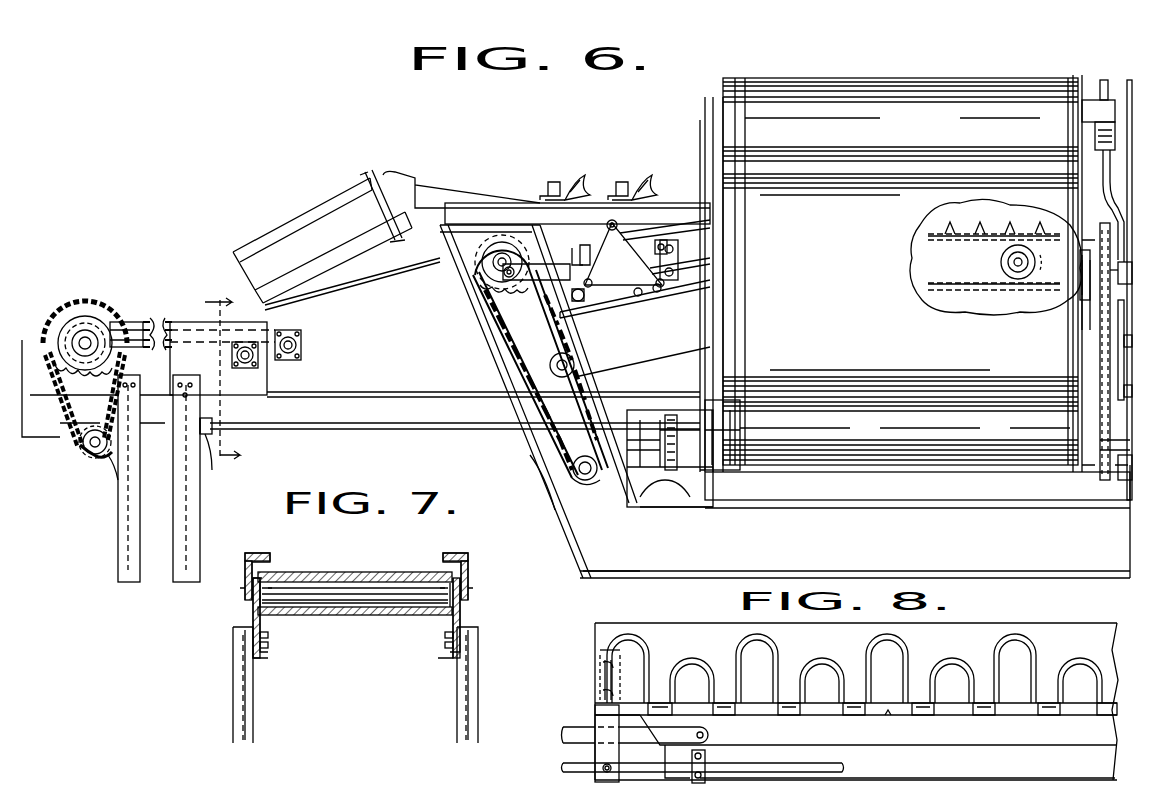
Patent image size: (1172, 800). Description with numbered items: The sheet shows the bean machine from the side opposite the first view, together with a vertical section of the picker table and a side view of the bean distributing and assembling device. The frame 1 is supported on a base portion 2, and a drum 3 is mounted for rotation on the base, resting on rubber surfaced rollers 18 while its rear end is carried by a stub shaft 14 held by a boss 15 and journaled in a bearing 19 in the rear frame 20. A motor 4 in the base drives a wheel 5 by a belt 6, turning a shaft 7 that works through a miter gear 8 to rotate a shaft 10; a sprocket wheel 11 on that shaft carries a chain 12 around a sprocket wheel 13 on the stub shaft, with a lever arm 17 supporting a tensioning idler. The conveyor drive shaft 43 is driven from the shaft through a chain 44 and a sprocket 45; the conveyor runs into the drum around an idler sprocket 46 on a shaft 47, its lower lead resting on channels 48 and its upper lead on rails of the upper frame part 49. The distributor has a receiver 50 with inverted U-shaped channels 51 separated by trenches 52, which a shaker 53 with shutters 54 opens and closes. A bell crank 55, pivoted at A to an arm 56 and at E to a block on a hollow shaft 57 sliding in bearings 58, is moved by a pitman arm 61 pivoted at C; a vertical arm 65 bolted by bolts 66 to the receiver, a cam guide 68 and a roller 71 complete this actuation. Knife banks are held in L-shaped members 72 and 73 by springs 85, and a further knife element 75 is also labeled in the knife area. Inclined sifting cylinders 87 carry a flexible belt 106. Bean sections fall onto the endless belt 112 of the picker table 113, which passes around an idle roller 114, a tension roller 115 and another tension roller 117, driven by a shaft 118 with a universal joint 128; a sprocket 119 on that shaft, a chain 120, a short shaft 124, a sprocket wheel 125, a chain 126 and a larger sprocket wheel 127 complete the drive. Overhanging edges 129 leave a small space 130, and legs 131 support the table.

In FIG. 6, the frame 1 is at (438, 240).
In FIG. 6, the base portion 2 is at (705, 565).
In FIG. 6, the drum 3 is at (818, 90).
In FIG. 6, the motor 4 is at (668, 500).
In FIG. 6, the wheel 5 is at (533, 478).
In FIG. 6, the belt 6 is at (667, 486).
In FIG. 6, the shaft 7 is at (588, 480).
In FIG. 6, the miter gear 8 is at (224, 380).
In FIG. 6, the shaft 10 is at (808, 478).
In FIG. 6, the sprocket wheel 11 is at (1103, 484).
In FIG. 6, the chain 12 is at (1110, 436).
In FIG. 6, the sprocket wheel 13 is at (1115, 300).
In FIG. 6, the stub shaft 14 is at (1094, 262).
In FIG. 6, the boss 15 is at (1082, 262).
In FIG. 6, the lever arm 17 is at (1125, 358).
In FIG. 6, the rubber surfaced rollers 18 is at (738, 422).
In FIG. 6, the bearing 19 is at (1125, 270).
In FIG. 6, the rear frame 20 is at (1132, 205).
In FIG. 6, the shaft 43 is at (482, 262).
In FIG. 6, the chain 44 is at (490, 345).
In FIG. 6, the sprocket 45 is at (500, 278).
In FIG. 6, the idler sprocket 46 is at (995, 265).
In FIG. 6, the shaft 47 is at (1012, 282).
In FIG. 6, the channels 48 is at (958, 298).
In FIG. 6, the upper part of the frame 49 is at (487, 317).
In FIG. 8, the receiver 50 is at (985, 633).
In FIG. 8, the inverted U-shaped channels 51 is at (648, 646).
In FIG. 8, the trench 52 is at (726, 688).
In FIG. 8, the shaker 53 is at (888, 717).
In FIG. 8, the shutters 54 is at (855, 718).
In FIG. 6, the bell crank 55 is at (622, 253).
In FIG. 6, the arm 56 is at (678, 225).
In FIG. 8, the arm 56 is at (570, 728).
In FIG. 6, the hollow shaft 57 is at (690, 272).
In FIG. 8, the hollow shaft 57 is at (580, 760).
In FIG. 6, the bearings 58 is at (660, 255).
In FIG. 8, the bearings 58 is at (712, 754).
In FIG. 6, the pitman arm 61 is at (525, 292).
In FIG. 8, the vertical arm 65 is at (595, 718).
In FIG. 8, the bolts 66 is at (600, 680).
In FIG. 6, the cam guide 68 is at (662, 290).
In FIG. 6, the roller 71 is at (640, 296).
In FIG. 6, the L-shaped member 72 is at (628, 178).
In FIG. 6, the L-shaped member 73 is at (555, 178).
In FIG. 6, the spring 75 is at (622, 188).
In FIG. 6, the springs 85 is at (650, 186).
In FIG. 6, the cylinders 87 is at (305, 235).
In FIG. 6, the flexible belt 106 is at (365, 218).
In FIG. 6, the endless belt 112 is at (165, 318).
In FIG. 7, the endless belt 112 is at (300, 578).
In FIG. 6, the picker table 113 is at (128, 318).
In FIG. 6, the idle roller 114 is at (302, 346).
In FIG. 7, the idle roller 114 is at (364, 608).
In FIG. 6, the tension roller 115 is at (236, 372).
In FIG. 6, the tension roller 117 is at (87, 381).
In FIG. 6, the shaft 118 is at (78, 335).
In FIG. 6, the bearing housing 119 is at (652, 418).
In FIG. 6, the chain 120 is at (680, 450).
In FIG. 6, the short shaft 124 is at (110, 470).
In FIG. 6, the sprocket wheel 125 is at (95, 462).
In FIG. 6, the chain 126 is at (75, 450).
In FIG. 6, the sprocket wheel 127 is at (48, 318).
In FIG. 6, the universal joint 128 is at (215, 470).
In FIG. 7, the edges 129 is at (256, 553).
In FIG. 7, the space 130 is at (252, 602).
In FIG. 6, the legs 131 is at (130, 582).
In FIG. 7, the legs 131 is at (252, 695).
In FIG. 6, the pivot A is at (606, 224).
In FIG. 6, the pivot C is at (578, 248).
In FIG. 6, the pivot E is at (580, 302).